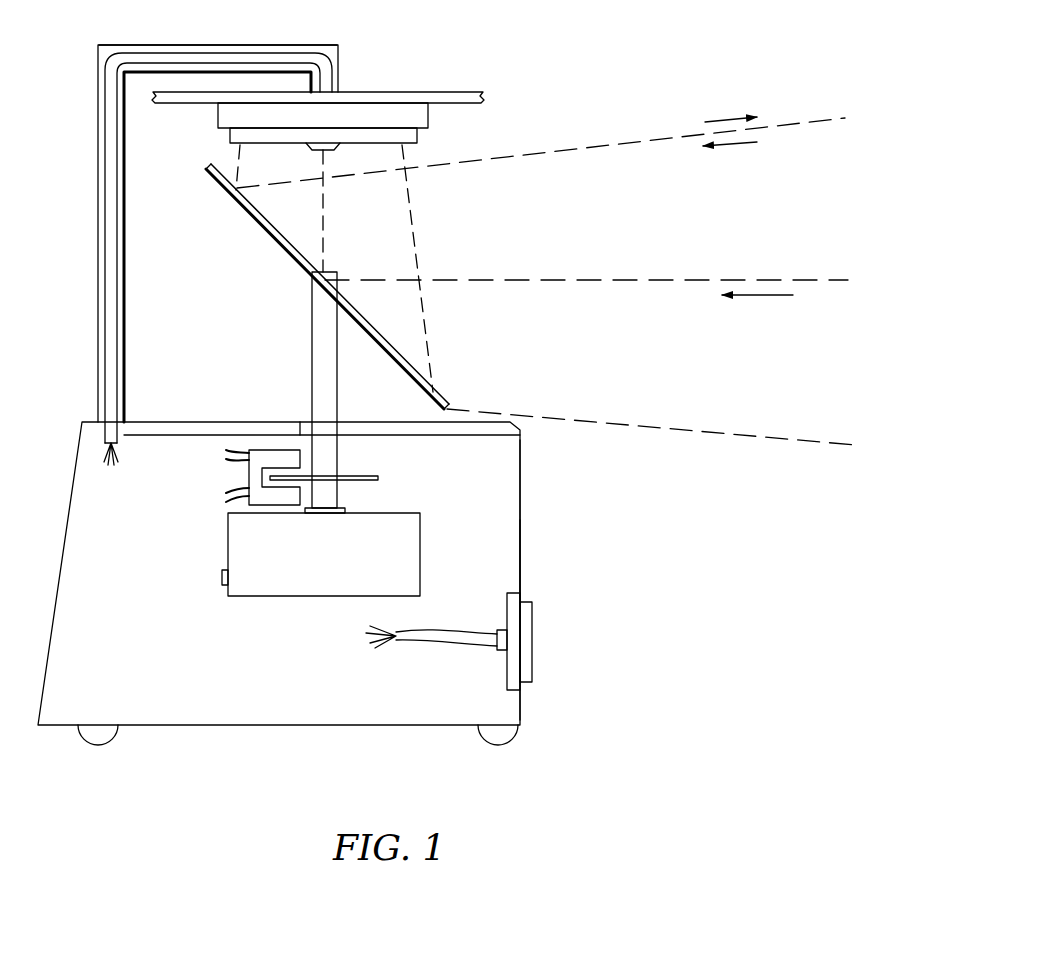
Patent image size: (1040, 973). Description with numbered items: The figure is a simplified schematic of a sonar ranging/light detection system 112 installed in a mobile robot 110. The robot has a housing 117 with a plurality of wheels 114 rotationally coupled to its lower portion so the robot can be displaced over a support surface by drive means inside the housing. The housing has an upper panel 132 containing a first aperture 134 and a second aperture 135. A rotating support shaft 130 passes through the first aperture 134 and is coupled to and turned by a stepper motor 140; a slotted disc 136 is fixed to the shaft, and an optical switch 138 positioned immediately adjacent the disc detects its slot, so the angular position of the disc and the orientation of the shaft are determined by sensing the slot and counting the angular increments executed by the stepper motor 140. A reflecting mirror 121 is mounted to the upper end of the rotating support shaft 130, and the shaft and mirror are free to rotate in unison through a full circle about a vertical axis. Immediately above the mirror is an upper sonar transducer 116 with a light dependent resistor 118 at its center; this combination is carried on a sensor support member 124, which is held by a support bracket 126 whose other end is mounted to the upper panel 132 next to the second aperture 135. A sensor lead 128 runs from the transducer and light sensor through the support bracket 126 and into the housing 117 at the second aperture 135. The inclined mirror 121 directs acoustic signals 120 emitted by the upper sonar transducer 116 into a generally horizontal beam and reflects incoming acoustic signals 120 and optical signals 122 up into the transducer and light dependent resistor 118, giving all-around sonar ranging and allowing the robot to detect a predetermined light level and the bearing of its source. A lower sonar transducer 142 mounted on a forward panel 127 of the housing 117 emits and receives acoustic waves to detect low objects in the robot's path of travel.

The mobile robot 110 is at (166, 652).
The sonar ranging/light detection system 112 is at (447, 311).
The wheels 114 is at (118, 730).
The upper sonar transducer 116 is at (429, 118).
The housing 117 is at (526, 490).
The light dependent resistor 118 is at (312, 147).
The acoustic signals 120 is at (618, 144).
The reflecting mirror 121 is at (268, 236).
The optical signals 122 is at (621, 280).
The sensor support member 124 is at (373, 91).
The support bracket 126 is at (323, 45).
The forward panel 127 is at (522, 543).
The sensor lead 128 is at (99, 262).
The rotating support shaft 130 is at (311, 350).
The upper panel 132 is at (192, 386).
The first aperture 134 is at (338, 428).
The second aperture 135 is at (99, 436).
The slotted disc 136 is at (352, 476).
The optical switch 138 is at (234, 479).
The stepper motor 140 is at (305, 551).
The lower sonar transducer 142 is at (532, 633).